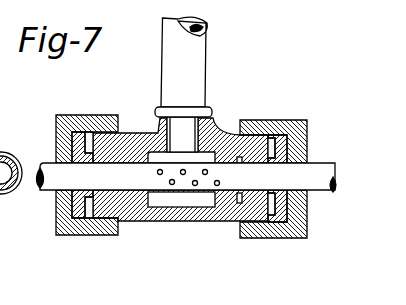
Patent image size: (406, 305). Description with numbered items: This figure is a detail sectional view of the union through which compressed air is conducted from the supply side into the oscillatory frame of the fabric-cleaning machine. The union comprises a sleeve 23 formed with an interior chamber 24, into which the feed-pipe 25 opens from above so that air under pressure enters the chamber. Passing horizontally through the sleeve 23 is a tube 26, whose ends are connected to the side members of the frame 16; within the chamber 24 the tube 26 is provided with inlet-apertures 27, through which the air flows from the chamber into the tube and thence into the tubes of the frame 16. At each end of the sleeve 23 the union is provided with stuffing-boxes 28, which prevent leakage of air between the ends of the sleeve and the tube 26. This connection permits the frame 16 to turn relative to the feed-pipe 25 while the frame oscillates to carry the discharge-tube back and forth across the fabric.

The oscillatory frame tubes 16 is at (1, 149).
The sleeve 23 is at (220, 121).
The interior chamber 24 is at (168, 200).
The feed-pipe 25 is at (187, 67).
The tube 26 is at (316, 191).
The inlet-apertures 27 is at (217, 186).
The stuffing-boxes 28 is at (82, 126).